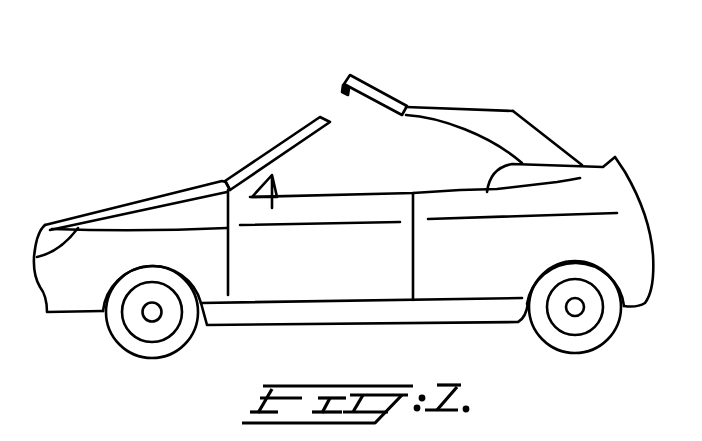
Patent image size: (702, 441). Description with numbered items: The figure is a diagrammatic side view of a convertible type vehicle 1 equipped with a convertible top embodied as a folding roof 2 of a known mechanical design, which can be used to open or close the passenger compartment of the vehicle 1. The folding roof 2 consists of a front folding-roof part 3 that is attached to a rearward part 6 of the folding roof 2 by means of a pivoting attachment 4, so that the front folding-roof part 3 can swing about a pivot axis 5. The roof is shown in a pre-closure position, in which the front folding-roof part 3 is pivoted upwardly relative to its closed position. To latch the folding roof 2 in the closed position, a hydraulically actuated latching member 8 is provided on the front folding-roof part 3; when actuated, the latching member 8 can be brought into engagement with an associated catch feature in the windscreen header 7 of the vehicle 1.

The vehicle 1 is at (150, 180).
The folding roof 2 is at (447, 85).
The front folding-roof part 3 is at (385, 90).
The pivoting attachment 4 is at (410, 107).
The pivot axis 5 is at (407, 117).
The rearward part 6 is at (532, 135).
The windscreen header 7 is at (327, 120).
The latching member 8 is at (339, 78).